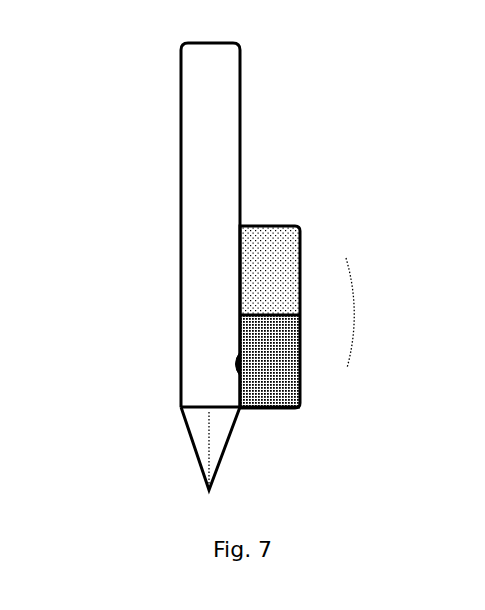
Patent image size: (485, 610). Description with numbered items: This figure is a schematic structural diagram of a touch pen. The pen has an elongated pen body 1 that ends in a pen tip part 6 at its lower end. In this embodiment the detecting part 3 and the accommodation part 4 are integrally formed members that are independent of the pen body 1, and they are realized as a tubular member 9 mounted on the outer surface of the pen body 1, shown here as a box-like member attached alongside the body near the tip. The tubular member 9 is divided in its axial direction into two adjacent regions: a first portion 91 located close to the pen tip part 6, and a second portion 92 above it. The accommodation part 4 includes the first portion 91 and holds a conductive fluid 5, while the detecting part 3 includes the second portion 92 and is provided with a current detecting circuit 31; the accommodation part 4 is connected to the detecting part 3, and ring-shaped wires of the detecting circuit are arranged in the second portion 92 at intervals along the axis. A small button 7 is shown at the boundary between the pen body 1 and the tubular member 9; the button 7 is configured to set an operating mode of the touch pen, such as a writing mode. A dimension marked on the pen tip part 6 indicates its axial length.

The pen body 1 is at (240, 168).
The detecting part 3 is at (265, 226).
The current detecting circuit 31 is at (253, 275).
The accommodation part 4 is at (238, 338).
The conductive fluid 5 is at (237, 350).
The pen tip part 6 is at (190, 440).
The button 7 is at (235, 370).
The tubular member 9 is at (359, 313).
The first portion 91 is at (308, 318).
The second portion 92 is at (300, 228).